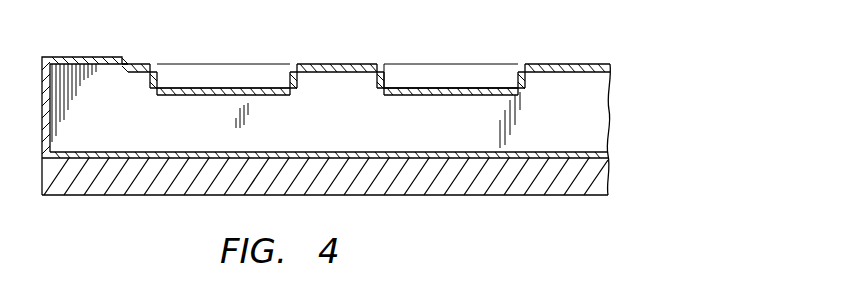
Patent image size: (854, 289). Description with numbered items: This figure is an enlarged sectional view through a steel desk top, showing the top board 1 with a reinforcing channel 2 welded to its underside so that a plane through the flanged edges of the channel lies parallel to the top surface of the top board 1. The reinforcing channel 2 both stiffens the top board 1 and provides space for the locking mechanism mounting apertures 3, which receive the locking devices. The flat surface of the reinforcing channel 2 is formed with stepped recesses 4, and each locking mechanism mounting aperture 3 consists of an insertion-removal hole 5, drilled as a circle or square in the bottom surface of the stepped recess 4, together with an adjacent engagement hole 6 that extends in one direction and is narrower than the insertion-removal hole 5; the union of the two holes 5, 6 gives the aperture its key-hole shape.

The top board 1 is at (105, 57).
The reinforcing channel 2 is at (330, 64).
The locking mechanism mounting aperture 3 is at (432, 87).
The stepped recess 4 is at (157, 76).
The insertion-removal hole 5 is at (243, 89).
The engagement hole 6 is at (203, 89).